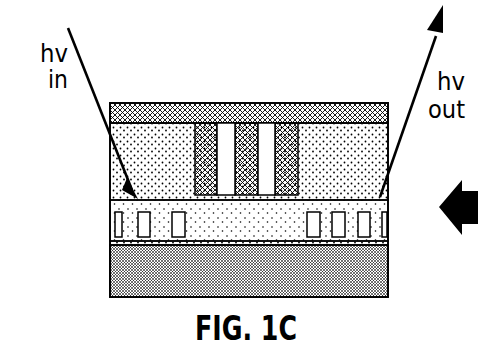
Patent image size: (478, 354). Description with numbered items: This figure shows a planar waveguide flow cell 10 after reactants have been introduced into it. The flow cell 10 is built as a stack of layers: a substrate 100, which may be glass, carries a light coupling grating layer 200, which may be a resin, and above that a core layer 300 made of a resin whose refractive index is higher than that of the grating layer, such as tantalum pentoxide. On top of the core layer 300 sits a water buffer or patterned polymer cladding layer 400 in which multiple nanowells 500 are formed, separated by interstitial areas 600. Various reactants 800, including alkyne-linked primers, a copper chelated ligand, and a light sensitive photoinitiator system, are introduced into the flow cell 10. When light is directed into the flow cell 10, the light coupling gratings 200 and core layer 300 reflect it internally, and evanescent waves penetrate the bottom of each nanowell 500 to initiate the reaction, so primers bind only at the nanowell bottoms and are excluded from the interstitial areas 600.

The planar waveguide flow cell 10 is at (165, 72).
The substrate 100 is at (110, 267).
The light coupling grating layer 200 is at (110, 237).
The core layer 300 is at (108, 208).
The patterned polymer cladding layer 400 is at (110, 193).
The nanowells 500 is at (208, 103).
The interstitial areas 600 is at (272, 103).
The reactants 800 is at (357, 103).